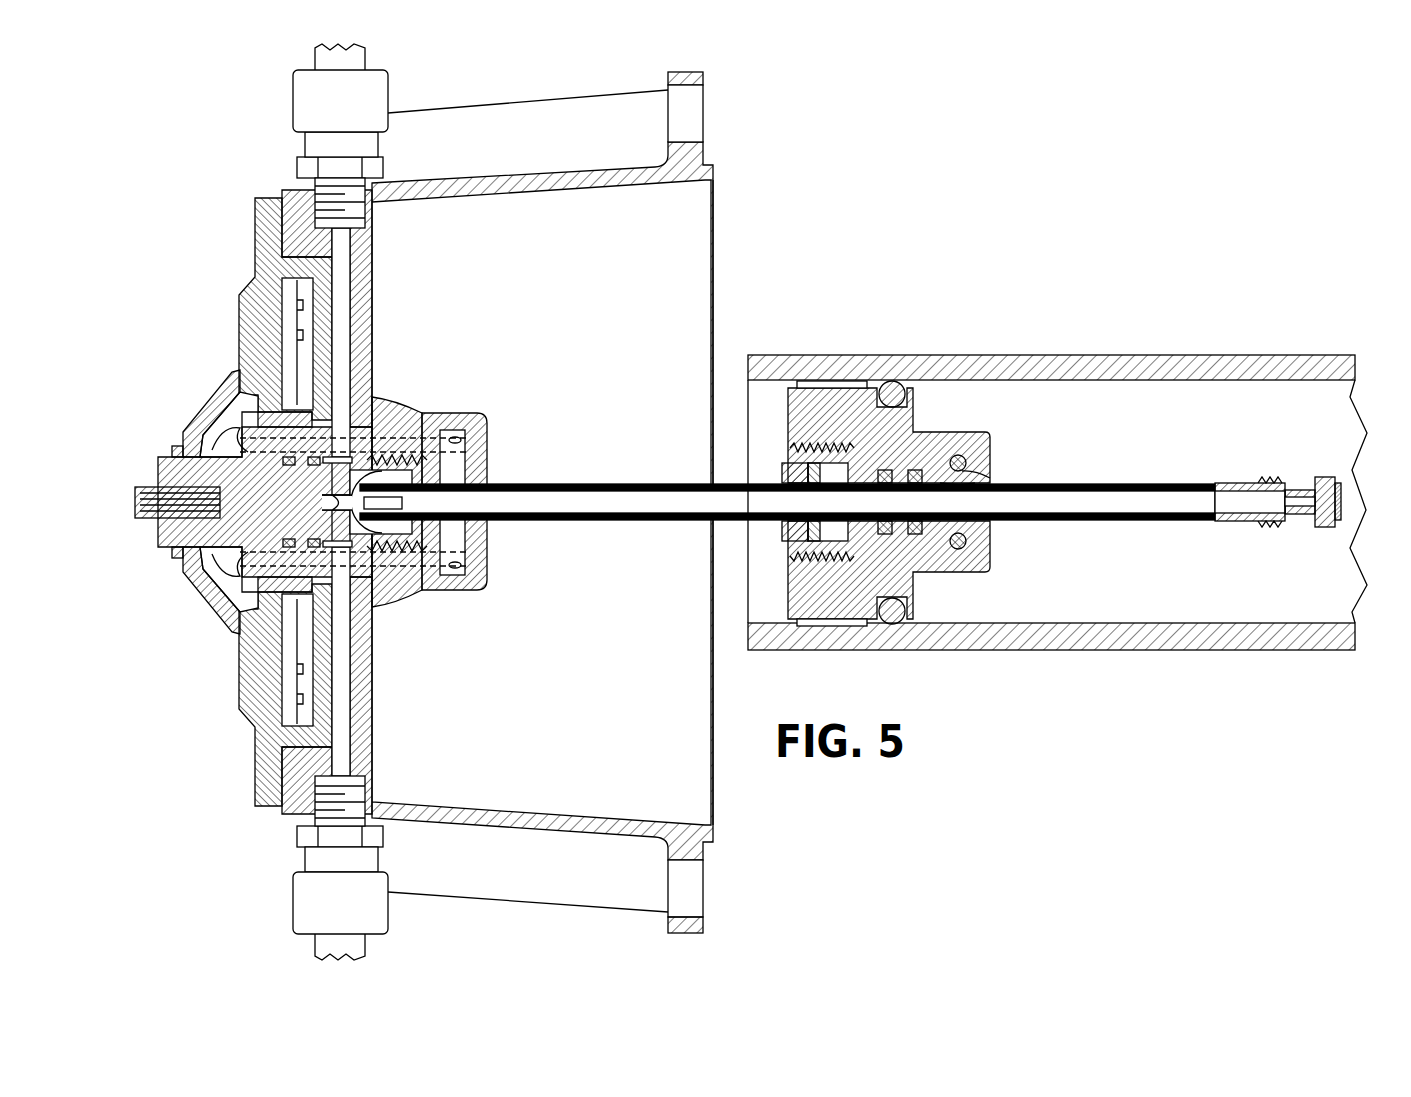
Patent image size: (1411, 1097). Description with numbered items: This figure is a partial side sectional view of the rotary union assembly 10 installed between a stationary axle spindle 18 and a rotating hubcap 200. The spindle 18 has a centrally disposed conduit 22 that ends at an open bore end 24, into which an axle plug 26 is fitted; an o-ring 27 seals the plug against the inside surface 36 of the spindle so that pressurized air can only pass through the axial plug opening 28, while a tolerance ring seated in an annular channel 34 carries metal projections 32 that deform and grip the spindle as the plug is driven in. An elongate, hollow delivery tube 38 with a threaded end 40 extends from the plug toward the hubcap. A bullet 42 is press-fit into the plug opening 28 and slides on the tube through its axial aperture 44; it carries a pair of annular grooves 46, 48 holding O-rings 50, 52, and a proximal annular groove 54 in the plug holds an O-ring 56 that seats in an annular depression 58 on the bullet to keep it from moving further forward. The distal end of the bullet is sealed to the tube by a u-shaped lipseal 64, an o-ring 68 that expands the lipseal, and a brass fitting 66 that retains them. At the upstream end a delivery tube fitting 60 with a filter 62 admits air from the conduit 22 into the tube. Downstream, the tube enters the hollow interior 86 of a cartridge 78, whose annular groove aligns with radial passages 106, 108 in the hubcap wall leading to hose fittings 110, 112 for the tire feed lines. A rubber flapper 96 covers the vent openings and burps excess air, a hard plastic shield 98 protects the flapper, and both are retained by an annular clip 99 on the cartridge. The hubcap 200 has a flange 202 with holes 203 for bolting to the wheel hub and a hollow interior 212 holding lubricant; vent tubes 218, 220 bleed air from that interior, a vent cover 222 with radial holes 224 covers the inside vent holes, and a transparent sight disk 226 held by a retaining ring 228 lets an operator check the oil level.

The rotary union assembly 10 is at (605, 525).
The axle spindle 18 is at (1068, 355).
The conduit 22 is at (1166, 451).
The open bore end 24 is at (716, 368).
The axle plug 26 is at (905, 498).
The o-ring 27 is at (892, 380).
The axial plug opening 28 is at (797, 548).
The metal projections 32 is at (870, 620).
The annular channel 34 is at (840, 382).
The inside surface 36 is at (1146, 623).
The delivery tube 38 is at (633, 483).
The threaded end 40 is at (1272, 524).
The bullet 42 is at (974, 464).
The axial aperture 44 is at (948, 488).
The annular groove 46 is at (874, 533).
The annular groove 48 is at (920, 536).
The O-ring 50 is at (880, 476).
The O-ring 52 is at (918, 470).
The proximal annular groove 54 is at (984, 542).
The O-ring 56 is at (966, 456).
The annular depression 58 is at (968, 473).
The delivery tube fitting 60 is at (1326, 477).
The filter 62 is at (1341, 503).
The lipseal 64 is at (815, 463).
The brass fitting 66 is at (783, 463).
The o-ring 68 is at (838, 541).
The cartridge 78 is at (166, 552).
The hollow interior 86 is at (322, 500).
The rubber flapper 96 is at (213, 612).
The shield 98 is at (222, 392).
The annular clip 99 is at (174, 446).
The radial passage 106 is at (345, 318).
The radial passage 108 is at (345, 698).
The hose fitting 110 is at (296, 167).
The hose fitting 112 is at (296, 831).
The hubcap 200 is at (252, 117).
The flange 202 is at (705, 922).
The holes 203 is at (697, 116).
The hollow interior 212 is at (562, 333).
The vent tube 218 is at (400, 428).
The vent tube 220 is at (402, 580).
The vent cover 222 is at (485, 420).
The radial holes 224 is at (484, 550).
The sight disk 226 is at (280, 673).
The retaining ring 228 is at (248, 284).